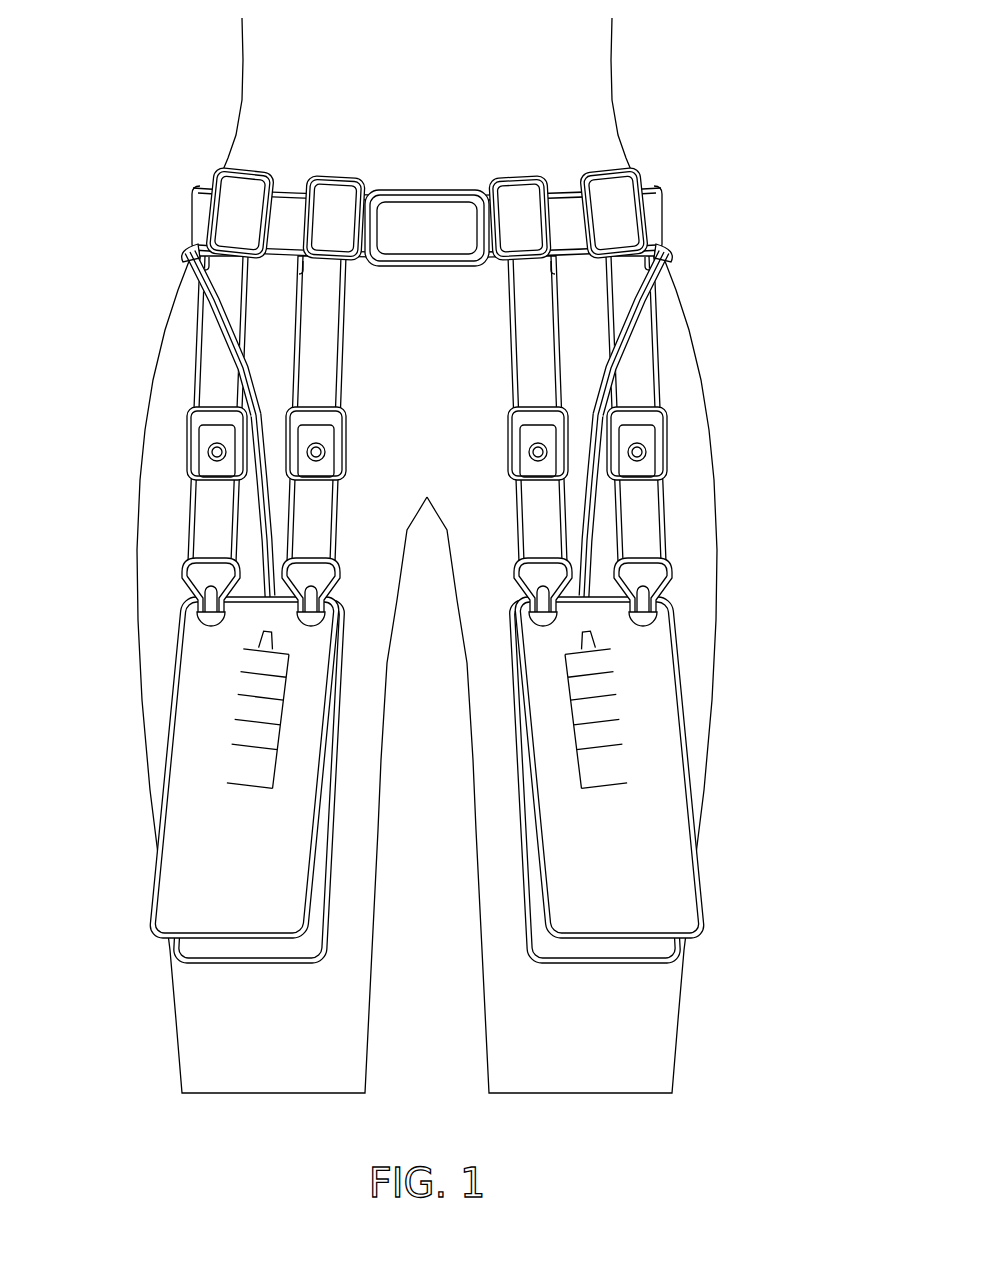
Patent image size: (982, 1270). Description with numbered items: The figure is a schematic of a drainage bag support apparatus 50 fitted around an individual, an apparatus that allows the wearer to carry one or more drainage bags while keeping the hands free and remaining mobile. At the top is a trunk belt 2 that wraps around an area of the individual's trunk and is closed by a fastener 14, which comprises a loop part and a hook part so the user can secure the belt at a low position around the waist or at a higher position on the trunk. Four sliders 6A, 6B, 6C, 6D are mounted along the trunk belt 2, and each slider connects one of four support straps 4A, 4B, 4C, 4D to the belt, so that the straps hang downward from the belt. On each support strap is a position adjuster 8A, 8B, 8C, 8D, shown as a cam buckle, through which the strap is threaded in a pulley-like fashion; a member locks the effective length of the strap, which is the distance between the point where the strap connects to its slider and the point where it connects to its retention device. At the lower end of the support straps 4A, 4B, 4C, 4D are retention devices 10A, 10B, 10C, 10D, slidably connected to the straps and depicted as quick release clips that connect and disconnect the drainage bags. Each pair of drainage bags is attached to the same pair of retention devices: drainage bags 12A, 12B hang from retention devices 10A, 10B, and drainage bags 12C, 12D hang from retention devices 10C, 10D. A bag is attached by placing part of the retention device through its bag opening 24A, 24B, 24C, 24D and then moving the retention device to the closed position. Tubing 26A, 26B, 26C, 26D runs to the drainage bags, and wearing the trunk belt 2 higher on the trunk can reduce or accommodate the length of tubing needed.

The trunk belt 2 is at (652, 213).
The fastener 14 is at (423, 214).
The slider 6A is at (212, 172).
The slider 6B is at (313, 180).
The slider 6C is at (533, 180).
The slider 6D is at (631, 171).
The support strap 4A is at (214, 383).
The support strap 4B is at (317, 373).
The support strap 4C is at (526, 331).
The support strap 4D is at (636, 378).
The position adjuster 8A is at (207, 452).
The position adjuster 8B is at (323, 452).
The position adjuster 8C is at (532, 452).
The position adjuster 8D is at (646, 452).
The retention device 10A is at (190, 590).
The retention device 10B is at (325, 597).
The retention device 10C is at (528, 575).
The retention device 10D is at (666, 582).
The bag opening 24A is at (192, 612).
The bag opening 24B is at (320, 624).
The bag opening 24C is at (535, 620).
The bag opening 24D is at (664, 620).
The tubing 26A is at (182, 244).
The tubing 26B is at (265, 522).
The tubing 26C is at (674, 250).
The tubing 26D is at (589, 522).
The drainage bag 12A is at (167, 900).
The drainage bag 12B is at (318, 905).
The drainage bag 12C is at (538, 947).
The drainage bag 12D is at (688, 898).
The drainage bag support apparatus 50 is at (431, 555).